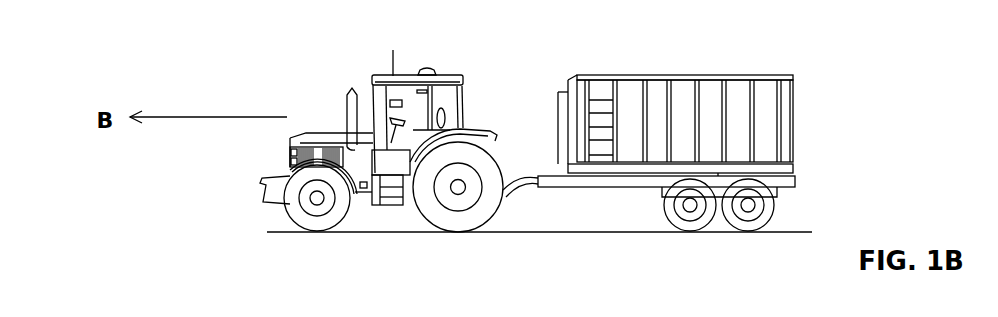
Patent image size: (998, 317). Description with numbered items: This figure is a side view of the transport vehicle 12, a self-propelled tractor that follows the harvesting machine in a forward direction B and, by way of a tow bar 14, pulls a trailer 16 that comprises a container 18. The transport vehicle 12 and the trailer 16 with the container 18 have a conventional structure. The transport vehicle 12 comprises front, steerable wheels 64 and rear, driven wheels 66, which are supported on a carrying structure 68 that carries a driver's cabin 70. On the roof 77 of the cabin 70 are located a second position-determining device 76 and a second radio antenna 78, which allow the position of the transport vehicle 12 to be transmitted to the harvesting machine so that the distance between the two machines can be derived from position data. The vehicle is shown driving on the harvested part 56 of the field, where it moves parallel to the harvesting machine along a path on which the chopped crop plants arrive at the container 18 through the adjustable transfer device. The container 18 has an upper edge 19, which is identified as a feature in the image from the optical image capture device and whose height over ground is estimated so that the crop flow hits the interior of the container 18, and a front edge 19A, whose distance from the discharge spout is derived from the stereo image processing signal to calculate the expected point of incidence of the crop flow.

The transport vehicle 12 is at (373, 240).
The tow bar 14 is at (520, 188).
The trailer 16 is at (660, 238).
The container 18 is at (712, 97).
The upper edge of the container 19 is at (672, 74).
The front edge of the container 19A is at (575, 75).
The harvested part of the field 56 is at (288, 231).
The front, steerable wheels 64 is at (297, 215).
The rear, driven wheels 66 is at (458, 219).
The carrying structure 68 is at (407, 198).
The driver's cabin 70 is at (463, 81).
The second position-determining device 76 is at (433, 71).
The roof 77 is at (443, 75).
The second radio antenna 78 is at (396, 62).